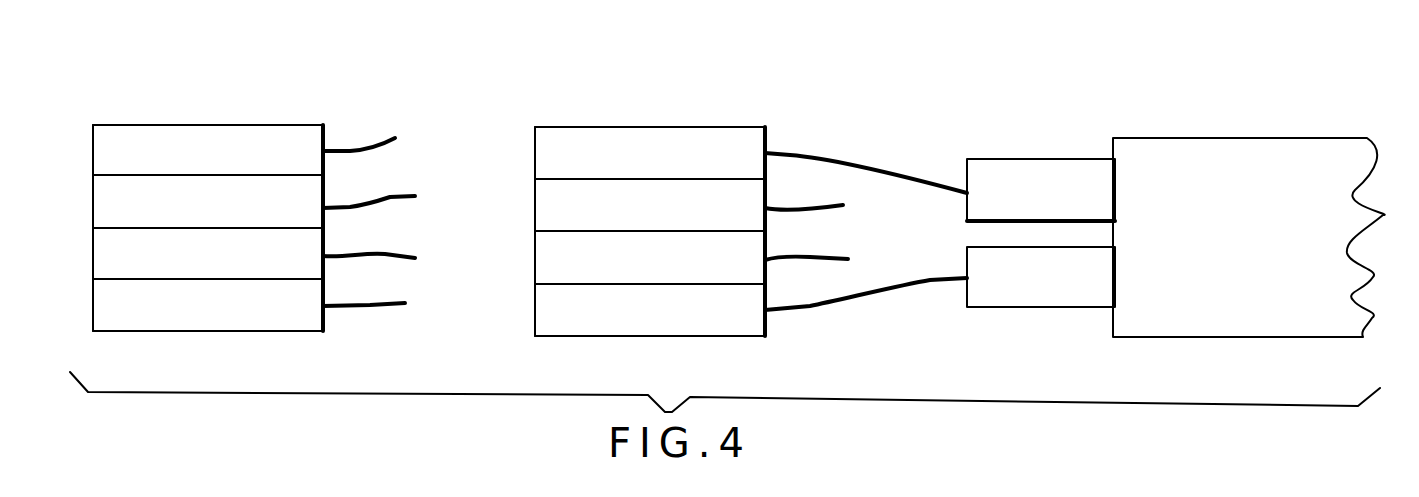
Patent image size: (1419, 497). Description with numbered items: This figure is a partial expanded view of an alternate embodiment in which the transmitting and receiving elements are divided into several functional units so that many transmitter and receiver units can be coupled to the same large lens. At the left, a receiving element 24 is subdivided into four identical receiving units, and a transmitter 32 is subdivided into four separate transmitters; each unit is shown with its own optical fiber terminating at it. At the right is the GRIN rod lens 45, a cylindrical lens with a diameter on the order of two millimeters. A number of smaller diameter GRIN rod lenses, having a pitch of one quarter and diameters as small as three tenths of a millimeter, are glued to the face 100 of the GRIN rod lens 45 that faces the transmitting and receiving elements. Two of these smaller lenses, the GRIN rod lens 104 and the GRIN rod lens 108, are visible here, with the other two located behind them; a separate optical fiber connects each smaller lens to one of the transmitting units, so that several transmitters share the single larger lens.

The receiving element 24 is at (182, 108).
The transmitter 32 is at (624, 111).
The face of the GRIN rod lens 100 is at (1115, 147).
The smaller diameter transmitting GRIN rod lens 104 is at (967, 221).
The smaller diameter transmitting GRIN rod lens 108 is at (1045, 335).
The GRIN rod lens 45 is at (1233, 137).